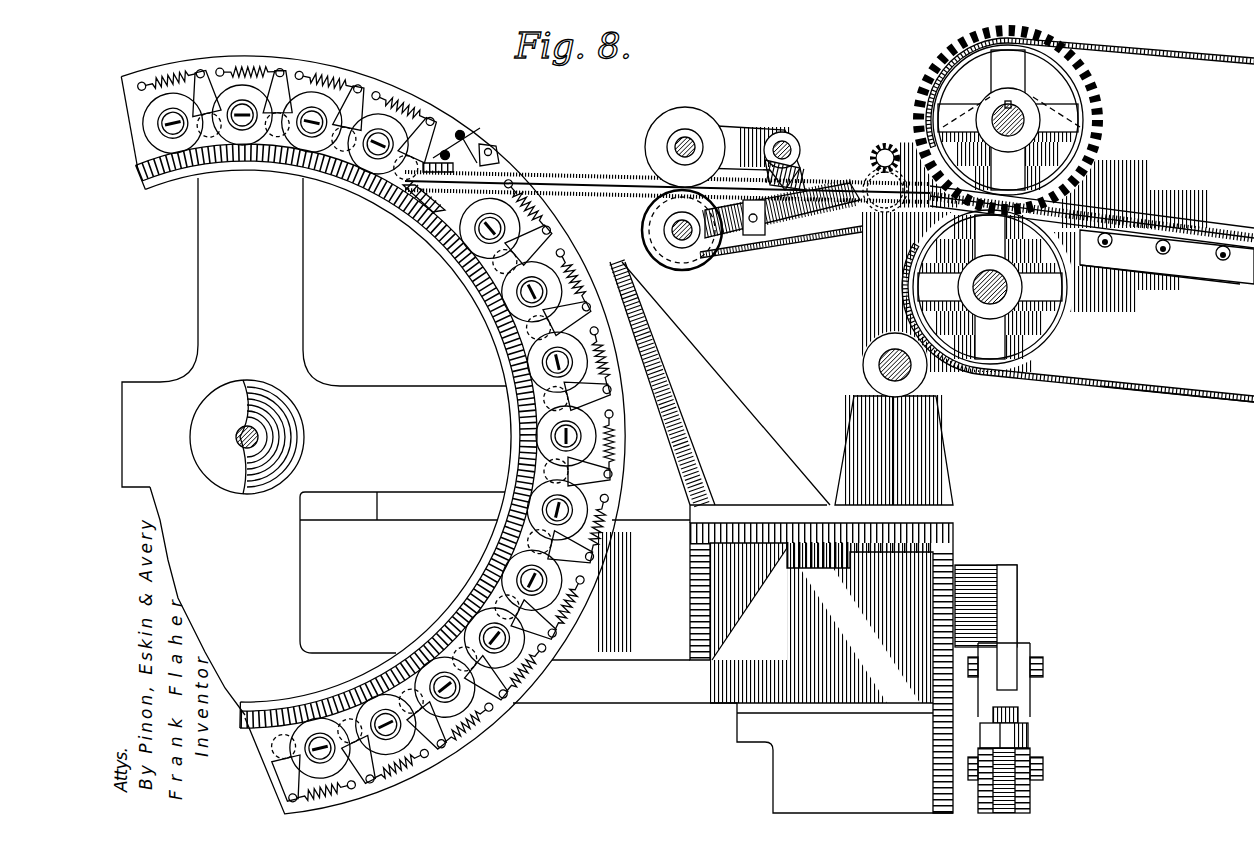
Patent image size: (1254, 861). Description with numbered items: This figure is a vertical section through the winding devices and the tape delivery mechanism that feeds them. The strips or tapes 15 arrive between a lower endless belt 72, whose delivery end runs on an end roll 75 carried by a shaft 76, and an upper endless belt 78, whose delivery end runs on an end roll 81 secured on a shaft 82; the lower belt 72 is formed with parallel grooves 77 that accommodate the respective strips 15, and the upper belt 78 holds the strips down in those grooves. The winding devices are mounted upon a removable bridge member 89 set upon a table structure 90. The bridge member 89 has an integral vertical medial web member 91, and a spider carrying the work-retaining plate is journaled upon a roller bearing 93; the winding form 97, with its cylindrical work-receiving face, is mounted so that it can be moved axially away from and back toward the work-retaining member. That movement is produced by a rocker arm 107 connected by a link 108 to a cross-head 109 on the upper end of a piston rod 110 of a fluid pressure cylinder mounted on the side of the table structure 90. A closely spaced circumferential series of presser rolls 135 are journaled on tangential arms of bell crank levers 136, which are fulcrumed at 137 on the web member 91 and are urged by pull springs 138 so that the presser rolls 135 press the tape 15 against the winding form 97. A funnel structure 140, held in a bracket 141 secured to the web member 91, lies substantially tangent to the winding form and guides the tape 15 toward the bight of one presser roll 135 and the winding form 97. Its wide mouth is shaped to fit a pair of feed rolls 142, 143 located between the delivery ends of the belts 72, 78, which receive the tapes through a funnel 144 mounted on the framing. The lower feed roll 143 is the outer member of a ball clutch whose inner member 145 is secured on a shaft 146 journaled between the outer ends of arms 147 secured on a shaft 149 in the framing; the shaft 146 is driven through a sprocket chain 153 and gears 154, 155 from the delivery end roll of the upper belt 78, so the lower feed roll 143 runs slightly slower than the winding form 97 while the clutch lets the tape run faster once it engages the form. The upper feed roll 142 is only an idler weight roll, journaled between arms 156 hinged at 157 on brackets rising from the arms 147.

The tape 15 is at (577, 177).
The lower endless belt 72 is at (1192, 385).
The end roll 75 is at (1050, 338).
The shaft 76 is at (992, 312).
The parallel grooves 77 is at (1143, 398).
The upper endless belt 78 is at (1240, 66).
The end roll 81 is at (1070, 72).
The shaft 82 is at (1012, 118).
The removable bridge member 89 is at (752, 537).
The table structure 90 is at (733, 758).
The vertical medial web member 91 is at (540, 685).
The roller bearing 93 is at (302, 445).
The winding form 97 is at (417, 227).
The rocker arm 107 is at (1007, 660).
The link 108 is at (1018, 710).
The cross-head 109 is at (1025, 805).
The piston rod 110 is at (1028, 722).
The presser roll 135 is at (480, 610).
The bell crank lever 136 is at (507, 703).
The fulcrum 137 is at (455, 650).
The pull spring 138 is at (480, 730).
The funnel structure 140 is at (498, 148).
The bracket 141 is at (480, 127).
The upper feed roll 142 is at (670, 120).
The lower feed roll 143 is at (647, 253).
The funnel 144 is at (840, 180).
The inner member of ball clutch 145 is at (648, 233).
The shaft 146 is at (688, 235).
The arm 147 is at (787, 225).
The shaft 149 is at (888, 146).
The sprocket chain 153 is at (812, 245).
The gear 154 is at (866, 172).
The gear 155 is at (925, 83).
The arm 156 is at (740, 135).
The hinge 157 is at (782, 140).